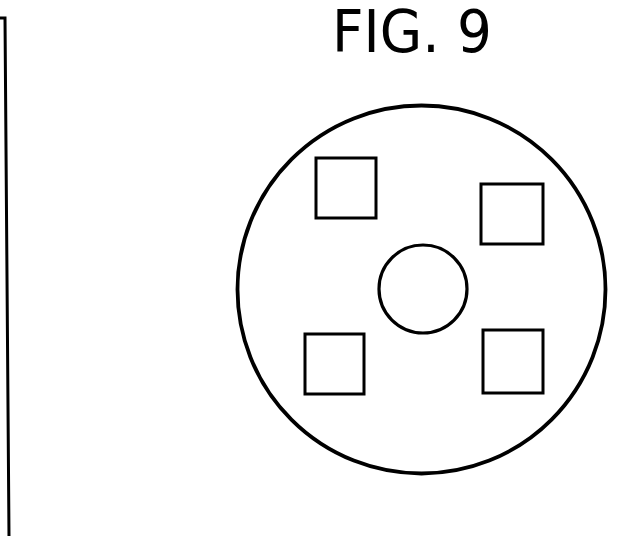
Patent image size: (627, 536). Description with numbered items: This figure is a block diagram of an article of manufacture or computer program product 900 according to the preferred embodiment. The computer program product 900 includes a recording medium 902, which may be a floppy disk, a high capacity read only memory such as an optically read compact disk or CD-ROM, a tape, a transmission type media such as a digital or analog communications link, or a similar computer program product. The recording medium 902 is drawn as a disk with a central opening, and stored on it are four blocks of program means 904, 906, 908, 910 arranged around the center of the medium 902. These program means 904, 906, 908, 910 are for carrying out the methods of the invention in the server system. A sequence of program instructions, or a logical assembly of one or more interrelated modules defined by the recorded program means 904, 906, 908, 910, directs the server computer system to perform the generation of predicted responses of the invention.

The computer program product 900 is at (524, 109).
The recording medium 902 is at (246, 233).
The program means 904 is at (512, 214).
The program means 906 is at (334, 364).
The program means 908 is at (346, 188).
The program means 910 is at (513, 361).